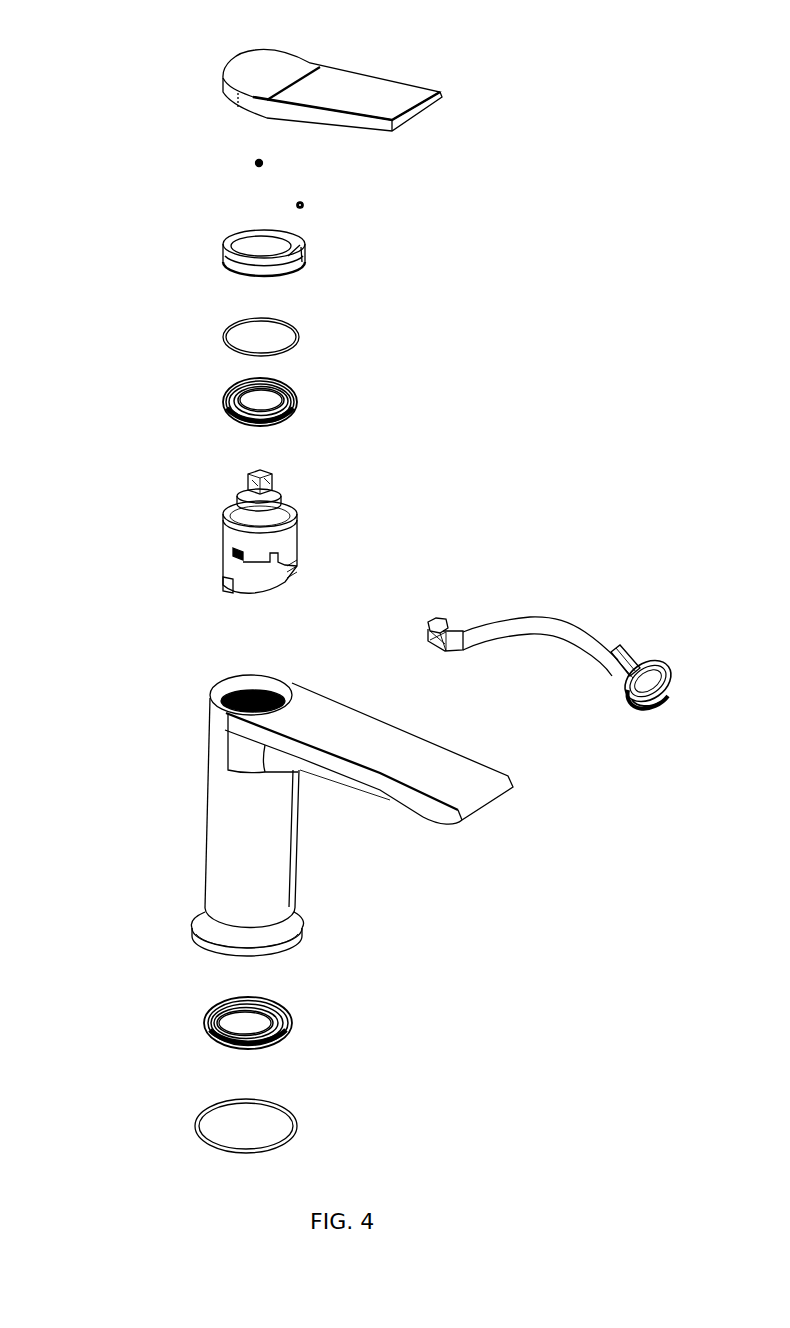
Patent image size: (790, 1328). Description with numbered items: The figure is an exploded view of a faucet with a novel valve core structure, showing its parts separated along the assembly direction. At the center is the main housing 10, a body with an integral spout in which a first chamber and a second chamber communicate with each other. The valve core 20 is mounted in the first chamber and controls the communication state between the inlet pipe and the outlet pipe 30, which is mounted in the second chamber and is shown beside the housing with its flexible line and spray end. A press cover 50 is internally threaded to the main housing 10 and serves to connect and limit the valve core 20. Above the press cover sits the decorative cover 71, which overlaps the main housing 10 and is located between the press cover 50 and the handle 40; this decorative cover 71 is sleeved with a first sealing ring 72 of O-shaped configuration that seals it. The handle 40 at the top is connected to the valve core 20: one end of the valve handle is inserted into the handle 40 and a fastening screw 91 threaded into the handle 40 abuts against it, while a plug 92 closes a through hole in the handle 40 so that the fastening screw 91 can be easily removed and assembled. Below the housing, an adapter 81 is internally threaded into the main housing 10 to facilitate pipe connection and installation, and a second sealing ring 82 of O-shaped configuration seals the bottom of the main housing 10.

The main housing 10 is at (230, 852).
The valve core 20 is at (222, 532).
The outlet pipe 30 is at (580, 630).
The handle 40 is at (356, 86).
The press cover 50 is at (226, 397).
The decorative cover 71 is at (303, 252).
The first sealing ring 72 is at (300, 338).
The adapter 81 is at (292, 1020).
The second sealing ring 82 is at (296, 1130).
The fastening screw 91 is at (257, 162).
The plug 92 is at (303, 204).